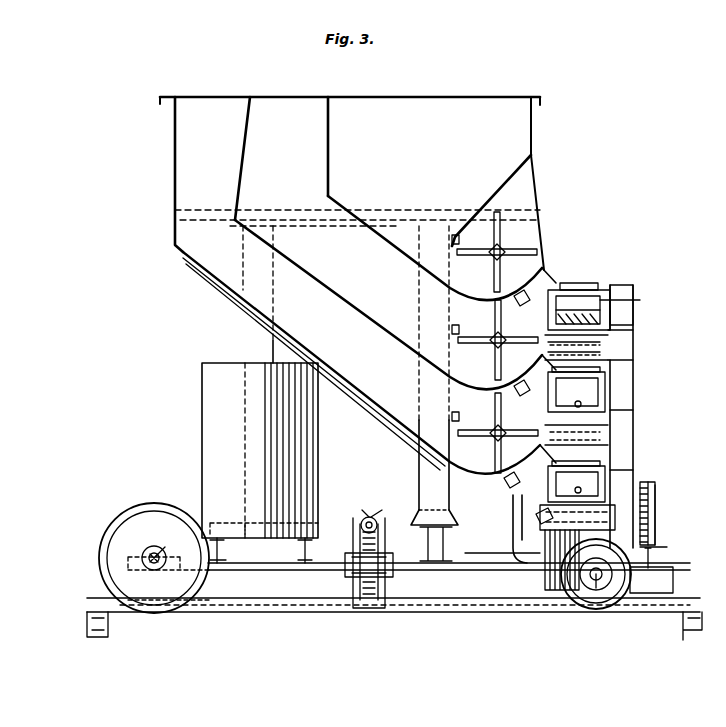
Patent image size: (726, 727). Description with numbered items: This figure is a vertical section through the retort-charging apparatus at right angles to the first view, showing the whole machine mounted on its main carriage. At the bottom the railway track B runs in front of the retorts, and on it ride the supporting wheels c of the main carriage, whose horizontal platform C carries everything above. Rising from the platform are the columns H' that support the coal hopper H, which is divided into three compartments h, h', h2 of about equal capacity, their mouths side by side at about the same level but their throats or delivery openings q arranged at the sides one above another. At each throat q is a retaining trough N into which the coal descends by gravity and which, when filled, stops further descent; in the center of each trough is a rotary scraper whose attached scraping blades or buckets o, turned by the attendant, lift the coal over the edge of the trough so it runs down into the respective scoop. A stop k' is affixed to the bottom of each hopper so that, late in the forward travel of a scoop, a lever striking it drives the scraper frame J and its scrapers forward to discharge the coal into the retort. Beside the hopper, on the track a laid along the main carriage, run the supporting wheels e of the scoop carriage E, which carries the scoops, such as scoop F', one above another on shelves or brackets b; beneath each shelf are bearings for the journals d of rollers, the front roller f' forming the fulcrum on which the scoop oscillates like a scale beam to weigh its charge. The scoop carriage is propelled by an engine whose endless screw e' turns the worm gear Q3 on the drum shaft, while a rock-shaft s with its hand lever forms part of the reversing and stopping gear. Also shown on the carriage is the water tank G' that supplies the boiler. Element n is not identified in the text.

The coal hopper H is at (351, 230).
The hopper compartment h is at (435, 224).
The hopper compartment h' is at (388, 304).
The hopper compartment h2 is at (361, 363).
The columns H' is at (354, 375).
The water tank G' is at (260, 463).
The scraping blades or buckets o is at (497, 342).
The throat or delivery opening q is at (441, 341).
The retaining trough N is at (535, 356).
The stop k' is at (508, 392).
The scraper frame J is at (579, 380).
The front roller f' is at (576, 391).
The shelf or bracket b is at (577, 431).
The rock-shaft s is at (531, 542).
The scoop carriage E is at (629, 416).
The scoop F' is at (628, 387).
The supporting wheels e is at (653, 514).
The track a is at (569, 565).
The connecting link n is at (550, 394).
The horizontal platform C is at (449, 548).
The supporting wheels c is at (365, 558).
The journals d is at (375, 566).
The worm gear Q3 is at (360, 580).
The endless screw e' is at (372, 508).
The railway track B is at (388, 619).